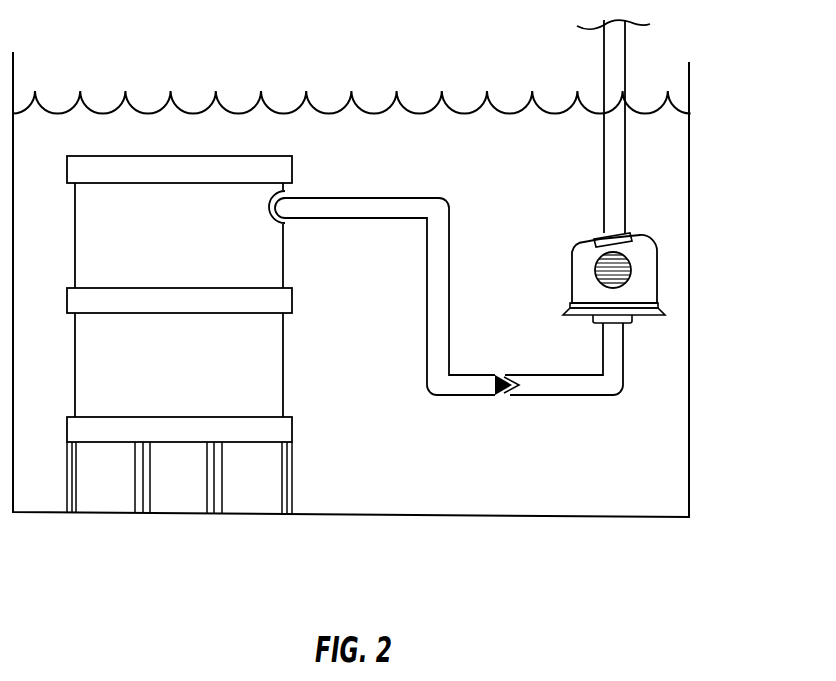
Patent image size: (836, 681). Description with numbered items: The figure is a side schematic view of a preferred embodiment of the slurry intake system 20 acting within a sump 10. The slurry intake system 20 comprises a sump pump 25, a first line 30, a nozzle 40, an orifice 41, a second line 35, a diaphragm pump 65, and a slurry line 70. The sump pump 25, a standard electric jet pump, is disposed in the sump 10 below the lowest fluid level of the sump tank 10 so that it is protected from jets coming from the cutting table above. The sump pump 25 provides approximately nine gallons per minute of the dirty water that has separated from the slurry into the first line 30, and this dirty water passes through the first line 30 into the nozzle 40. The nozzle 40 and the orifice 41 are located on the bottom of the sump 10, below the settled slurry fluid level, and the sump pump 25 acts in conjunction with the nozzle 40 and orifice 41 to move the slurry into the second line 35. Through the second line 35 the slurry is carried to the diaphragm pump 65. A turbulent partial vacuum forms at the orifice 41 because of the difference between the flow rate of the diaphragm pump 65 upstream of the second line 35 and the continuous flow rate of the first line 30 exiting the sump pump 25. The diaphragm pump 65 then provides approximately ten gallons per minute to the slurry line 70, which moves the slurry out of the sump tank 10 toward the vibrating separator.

The sump 10 is at (690, 432).
The slurry intake system 20 is at (740, 88).
The sump pump 25 is at (196, 249).
The first line 30 is at (367, 201).
The second line 35 is at (590, 397).
The nozzle 40 is at (500, 375).
The orifice 41 is at (512, 396).
The diaphragm pump 65 is at (648, 272).
The slurry line 70 is at (615, 165).